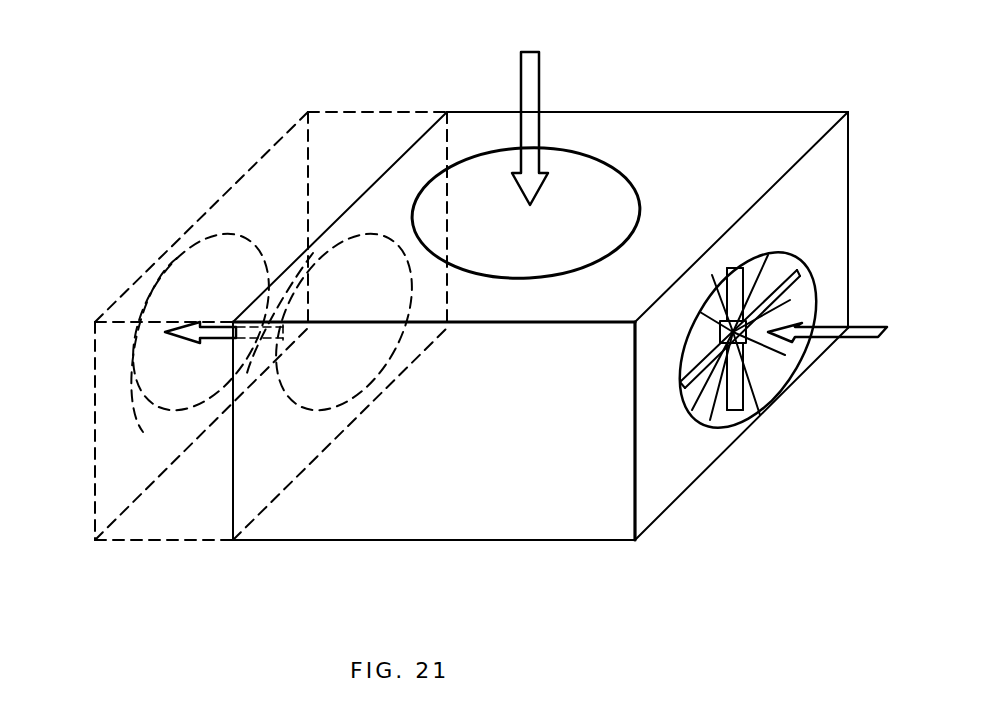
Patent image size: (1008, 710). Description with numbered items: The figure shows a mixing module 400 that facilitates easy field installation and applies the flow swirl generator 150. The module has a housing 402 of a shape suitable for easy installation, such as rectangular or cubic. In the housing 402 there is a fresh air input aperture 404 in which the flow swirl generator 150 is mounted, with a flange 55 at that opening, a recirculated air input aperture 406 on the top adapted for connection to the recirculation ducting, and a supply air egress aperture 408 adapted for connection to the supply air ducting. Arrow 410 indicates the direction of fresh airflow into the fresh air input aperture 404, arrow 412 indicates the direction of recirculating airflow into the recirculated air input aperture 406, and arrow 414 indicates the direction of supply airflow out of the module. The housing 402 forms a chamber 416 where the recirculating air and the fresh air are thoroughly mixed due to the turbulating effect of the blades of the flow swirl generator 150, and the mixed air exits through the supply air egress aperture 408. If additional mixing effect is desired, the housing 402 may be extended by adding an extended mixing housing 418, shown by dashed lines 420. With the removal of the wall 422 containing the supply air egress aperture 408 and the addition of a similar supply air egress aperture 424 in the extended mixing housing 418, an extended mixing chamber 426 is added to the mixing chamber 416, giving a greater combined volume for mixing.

The mixing module 400 is at (770, 72).
The housing 402 is at (542, 517).
The fresh air input aperture 404 is at (777, 253).
The recirculated air input aperture 406 is at (603, 178).
The supply air egress aperture 408 is at (367, 382).
The arrow 410 is at (853, 342).
The arrow 412 is at (535, 78).
The arrow 414 is at (223, 336).
The chamber 416 is at (456, 421).
The extended mixing housing 418 is at (108, 365).
The dashed lines 420 is at (170, 535).
The wall 422 is at (418, 163).
The supply air egress aperture 424 is at (178, 258).
The extended mixing chamber 426 is at (370, 165).
The flange 55 is at (772, 378).
The flow swirl generator 150 is at (777, 307).